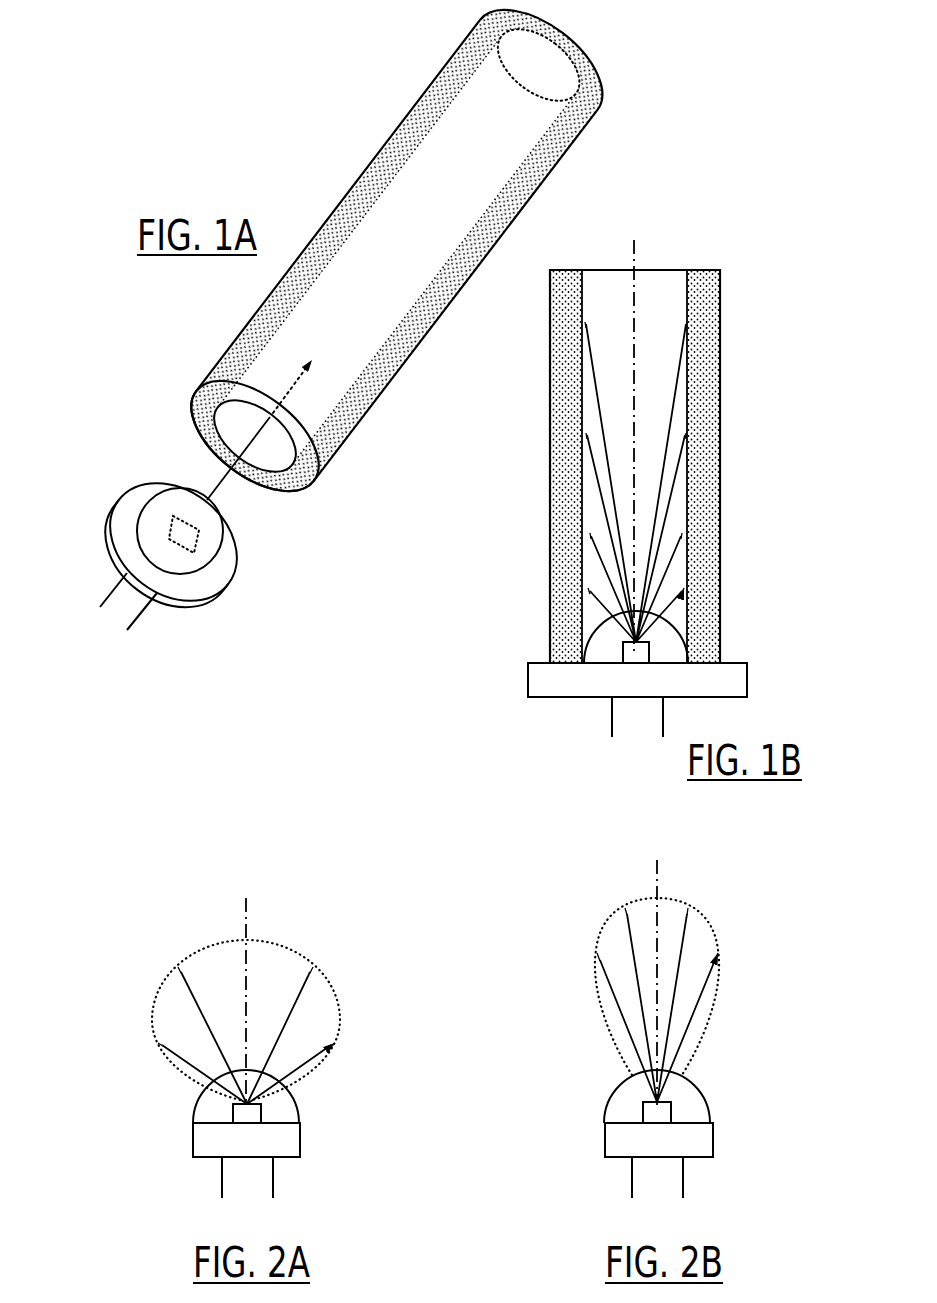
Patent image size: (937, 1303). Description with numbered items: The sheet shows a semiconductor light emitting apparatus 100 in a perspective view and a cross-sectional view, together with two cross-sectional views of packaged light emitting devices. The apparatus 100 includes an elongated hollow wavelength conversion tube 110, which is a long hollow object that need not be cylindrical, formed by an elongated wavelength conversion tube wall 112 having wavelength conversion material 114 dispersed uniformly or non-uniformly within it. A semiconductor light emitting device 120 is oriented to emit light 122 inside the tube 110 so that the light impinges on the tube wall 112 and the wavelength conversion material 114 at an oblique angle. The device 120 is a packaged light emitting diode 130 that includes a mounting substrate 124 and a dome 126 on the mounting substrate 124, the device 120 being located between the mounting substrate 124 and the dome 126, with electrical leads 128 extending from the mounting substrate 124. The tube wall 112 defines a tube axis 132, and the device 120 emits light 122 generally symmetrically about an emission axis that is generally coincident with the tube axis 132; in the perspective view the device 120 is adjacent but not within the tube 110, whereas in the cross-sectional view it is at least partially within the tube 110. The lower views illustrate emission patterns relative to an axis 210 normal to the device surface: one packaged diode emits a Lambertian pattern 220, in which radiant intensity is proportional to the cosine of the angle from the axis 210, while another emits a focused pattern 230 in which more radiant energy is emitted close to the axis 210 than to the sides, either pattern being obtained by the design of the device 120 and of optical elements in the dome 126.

In FIG. 1B, the semiconductor light emitting apparatus 100 is at (680, 493).
In FIG. 1A, the elongated hollow wavelength conversion tube 110 is at (397, 258).
In FIG. 1B, the elongated hollow wavelength conversion tube 110 is at (645, 434).
In FIG. 1A, the elongated wavelength conversion tube wall 112 is at (397, 256).
In FIG. 1B, the elongated wavelength conversion tube wall 112 is at (722, 443).
In FIG. 1A, the wavelength conversion material 114 is at (381, 107).
In FIG. 1B, the wavelength conversion material 114 is at (568, 382).
In FIG. 1A, the semiconductor light emitting device 120 is at (203, 532).
In FIG. 1B, the semiconductor light emitting device 120 is at (628, 652).
In FIG. 2A, the semiconductor light emitting device 120 is at (257, 1116).
In FIG. 2B, the semiconductor light emitting device 120 is at (668, 1114).
In FIG. 1A, the light 122 is at (207, 440).
In FIG. 1B, the light 122 is at (590, 570).
In FIG. 2A, the light 122 is at (318, 1064).
In FIG. 2B, the light 122 is at (698, 1036).
In FIG. 1A, the mounting substrate 124 is at (112, 548).
In FIG. 1B, the mounting substrate 124 is at (712, 698).
In FIG. 2A, the mounting substrate 124 is at (246, 1140).
In FIG. 2B, the mounting substrate 124 is at (659, 1140).
In FIG. 1A, the dome 126 is at (158, 487).
In FIG. 1B, the dome 126 is at (595, 628).
In FIG. 2A, the dome 126 is at (200, 1105).
In FIG. 2B, the dome 126 is at (610, 1103).
In FIG. 1A, the electrical leads 128 is at (117, 588).
In FIG. 1B, the electrical leads 128 is at (663, 722).
In FIG. 2A, the electrical leads 128 is at (222, 1182).
In FIG. 2B, the electrical leads 128 is at (632, 1182).
In FIG. 1A, the packaged light emitting diode 130 is at (188, 514).
In FIG. 1B, the packaged light emitting diode 130 is at (654, 551).
In FIG. 2A, the packaged light emitting diode 130 is at (248, 1103).
In FIG. 2B, the packaged light emitting diode 130 is at (644, 1073).
In FIG. 1B, the tube axis 132 is at (632, 253).
In FIG. 2A, the axis 210 is at (242, 925).
In FIG. 2B, the axis 210 is at (652, 880).
In FIG. 2A, the Lambertian pattern 220 is at (152, 1000).
In FIG. 2B, the focused pattern 230 is at (596, 975).